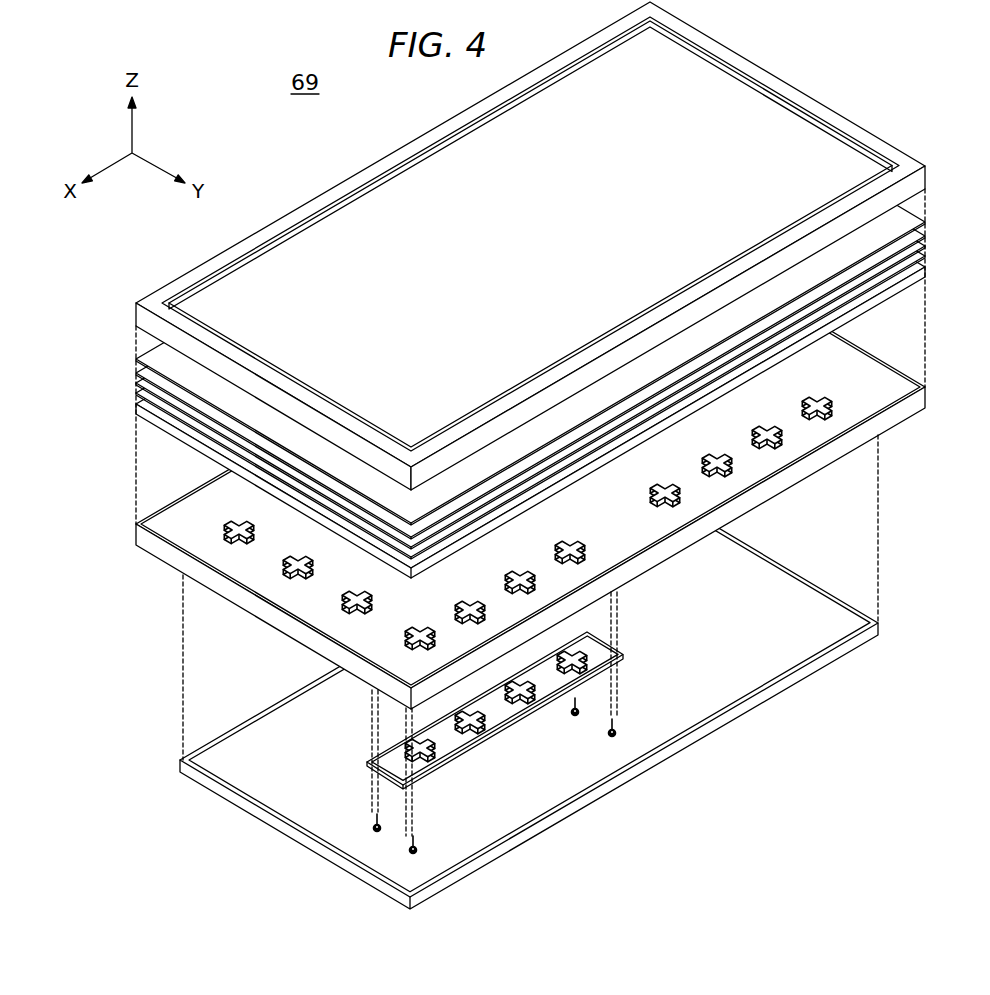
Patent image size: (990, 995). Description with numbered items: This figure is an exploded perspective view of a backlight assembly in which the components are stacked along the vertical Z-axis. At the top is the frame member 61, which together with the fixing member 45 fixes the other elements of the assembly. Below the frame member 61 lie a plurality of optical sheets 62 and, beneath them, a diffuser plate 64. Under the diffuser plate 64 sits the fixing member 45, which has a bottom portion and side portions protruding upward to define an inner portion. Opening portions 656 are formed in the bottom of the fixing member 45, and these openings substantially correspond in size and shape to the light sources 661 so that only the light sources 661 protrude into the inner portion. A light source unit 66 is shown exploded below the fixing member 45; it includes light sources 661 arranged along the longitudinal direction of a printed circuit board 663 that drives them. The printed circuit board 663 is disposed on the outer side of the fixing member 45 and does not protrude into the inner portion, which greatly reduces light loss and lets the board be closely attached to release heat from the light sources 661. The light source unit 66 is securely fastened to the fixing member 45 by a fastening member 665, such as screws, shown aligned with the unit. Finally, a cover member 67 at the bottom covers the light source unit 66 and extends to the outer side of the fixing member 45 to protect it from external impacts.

The frame member 61 is at (926, 168).
The optical sheets 62 is at (932, 219).
The diffuser plate 64 is at (926, 272).
The fixing member 45 is at (921, 398).
The opening portions 656 is at (583, 557).
The cover member 67 is at (880, 627).
The light source units 66 is at (495, 730).
The light sources 661 is at (524, 697).
The printed circuit board 663 is at (541, 688).
The fastening member 665 is at (618, 731).